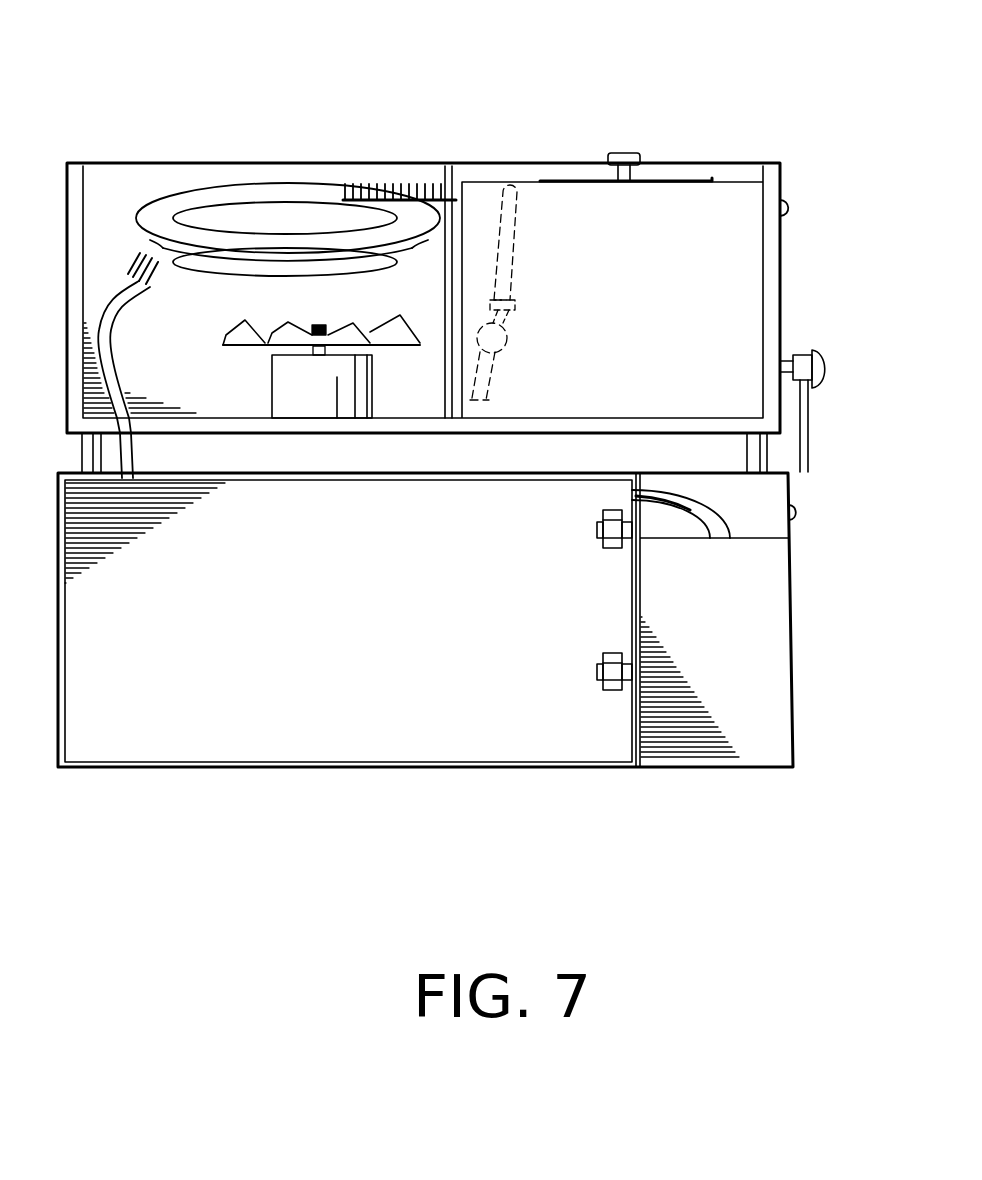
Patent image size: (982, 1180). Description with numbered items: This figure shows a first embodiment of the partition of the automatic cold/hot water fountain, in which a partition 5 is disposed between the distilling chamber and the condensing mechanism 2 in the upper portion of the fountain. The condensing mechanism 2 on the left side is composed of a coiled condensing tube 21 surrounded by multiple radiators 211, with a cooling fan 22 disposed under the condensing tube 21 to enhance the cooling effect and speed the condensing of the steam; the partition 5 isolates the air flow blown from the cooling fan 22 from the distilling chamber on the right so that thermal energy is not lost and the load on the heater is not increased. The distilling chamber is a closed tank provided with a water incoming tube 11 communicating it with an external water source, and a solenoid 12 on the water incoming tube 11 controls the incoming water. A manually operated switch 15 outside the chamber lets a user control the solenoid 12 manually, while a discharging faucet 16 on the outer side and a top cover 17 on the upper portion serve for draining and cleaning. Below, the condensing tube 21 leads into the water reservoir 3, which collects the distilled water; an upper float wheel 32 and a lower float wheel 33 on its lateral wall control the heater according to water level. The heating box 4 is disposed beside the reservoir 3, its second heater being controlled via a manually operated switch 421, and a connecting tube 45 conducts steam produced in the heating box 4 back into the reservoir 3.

The condensing mechanism 2 is at (272, 102).
The water reservoir 3 is at (316, 738).
The heating box 4 is at (768, 735).
The partition 5 is at (448, 183).
The water incoming tube 11 is at (514, 255).
The solenoid 12 is at (509, 340).
The manually operated switch 15 is at (787, 208).
The discharging faucet 16 is at (815, 358).
The top cover 17 is at (632, 155).
The condensing tube 21 is at (339, 190).
The radiators 211 is at (398, 183).
The cooling fan 22 is at (402, 340).
The upper float wheel 32 is at (606, 543).
The lower float wheel 33 is at (606, 683).
The connecting tube 45 is at (718, 520).
The manually operated switch 421 is at (797, 512).